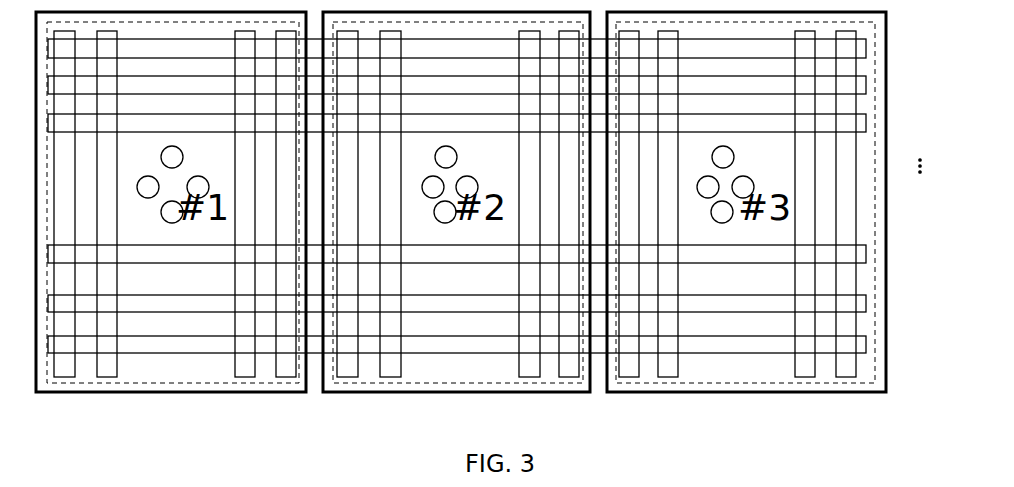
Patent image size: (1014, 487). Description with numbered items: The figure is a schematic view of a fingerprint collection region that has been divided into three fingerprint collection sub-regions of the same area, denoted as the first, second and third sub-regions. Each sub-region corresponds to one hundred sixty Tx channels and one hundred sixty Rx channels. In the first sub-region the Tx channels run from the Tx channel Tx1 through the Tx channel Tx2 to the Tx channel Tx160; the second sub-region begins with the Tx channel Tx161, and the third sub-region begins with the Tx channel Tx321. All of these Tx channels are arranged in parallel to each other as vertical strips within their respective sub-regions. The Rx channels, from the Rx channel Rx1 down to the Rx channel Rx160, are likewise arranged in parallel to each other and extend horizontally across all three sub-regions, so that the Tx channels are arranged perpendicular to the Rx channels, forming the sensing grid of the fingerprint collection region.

The Tx channel Tx1 is at (68, 380).
The Tx channel Tx2 is at (107, 380).
The Tx channel Tx160 is at (290, 380).
The Tx channel Tx161 is at (348, 380).
The Tx channel Tx321 is at (628, 380).
The Rx channel Rx1 is at (866, 48).
The Rx channel Rx160 is at (866, 341).